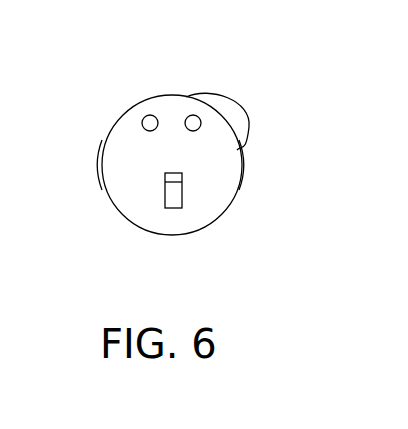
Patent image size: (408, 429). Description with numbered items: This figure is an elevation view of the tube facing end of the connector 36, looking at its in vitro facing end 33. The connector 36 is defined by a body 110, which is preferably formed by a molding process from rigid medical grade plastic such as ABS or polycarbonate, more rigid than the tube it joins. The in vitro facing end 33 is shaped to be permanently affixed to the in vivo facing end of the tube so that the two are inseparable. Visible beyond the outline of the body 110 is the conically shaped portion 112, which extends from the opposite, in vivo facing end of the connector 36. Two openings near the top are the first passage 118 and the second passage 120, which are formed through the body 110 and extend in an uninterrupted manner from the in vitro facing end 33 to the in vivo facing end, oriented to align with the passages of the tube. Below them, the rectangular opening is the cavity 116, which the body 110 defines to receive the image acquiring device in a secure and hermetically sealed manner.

The body 110 is at (137, 208).
The connector 36 is at (102, 163).
The in vitro facing end 33 is at (240, 180).
The conically shaped portion 112 is at (247, 122).
The first passage 118 is at (147, 119).
The second passage 120 is at (194, 117).
The cavity 116 is at (172, 198).